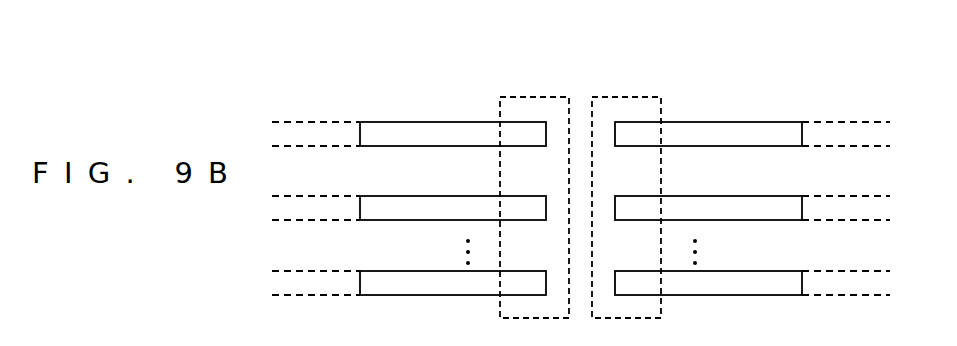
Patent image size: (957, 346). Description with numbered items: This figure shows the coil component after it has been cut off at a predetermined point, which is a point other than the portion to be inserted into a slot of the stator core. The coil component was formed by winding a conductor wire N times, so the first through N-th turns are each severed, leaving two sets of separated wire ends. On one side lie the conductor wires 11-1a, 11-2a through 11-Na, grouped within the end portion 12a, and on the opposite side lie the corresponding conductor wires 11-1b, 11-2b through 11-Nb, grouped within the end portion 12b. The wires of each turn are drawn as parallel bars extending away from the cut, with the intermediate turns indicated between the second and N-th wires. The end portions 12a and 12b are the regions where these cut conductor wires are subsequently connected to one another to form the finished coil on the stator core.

The end portion 12a is at (525, 95).
The end portion 12b is at (638, 95).
The conductor wire 11-1a is at (423, 133).
The conductor wire 11-2a is at (423, 207).
The conductor wire 11-Na is at (423, 283).
The conductor wire 11-1b is at (745, 135).
The conductor wire 11-2b is at (740, 208).
The conductor wire 11-Nb is at (740, 283).